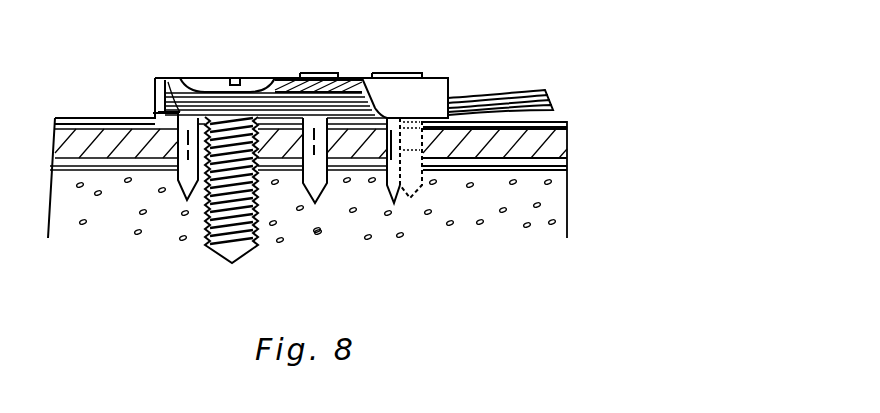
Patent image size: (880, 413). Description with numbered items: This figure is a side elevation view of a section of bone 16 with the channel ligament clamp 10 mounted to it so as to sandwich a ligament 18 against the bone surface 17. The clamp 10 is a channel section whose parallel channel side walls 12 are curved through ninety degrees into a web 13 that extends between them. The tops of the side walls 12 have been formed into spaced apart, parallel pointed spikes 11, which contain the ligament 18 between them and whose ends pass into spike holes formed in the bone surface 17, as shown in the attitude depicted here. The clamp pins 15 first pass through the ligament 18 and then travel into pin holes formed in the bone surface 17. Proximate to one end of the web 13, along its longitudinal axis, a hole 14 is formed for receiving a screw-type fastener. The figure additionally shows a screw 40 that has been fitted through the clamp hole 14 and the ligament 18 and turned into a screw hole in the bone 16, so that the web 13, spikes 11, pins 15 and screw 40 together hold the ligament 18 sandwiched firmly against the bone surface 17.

The clamp 10 is at (347, 80).
The spikes 11 is at (187, 170).
The channel side walls 12 is at (153, 113).
The web 13 is at (275, 80).
The hole 14 is at (188, 78).
The clamp pins 15 is at (303, 183).
The bone 16 is at (452, 258).
The bone surface 17 is at (563, 122).
The ligament 18 is at (547, 93).
The screw 40 is at (208, 80).